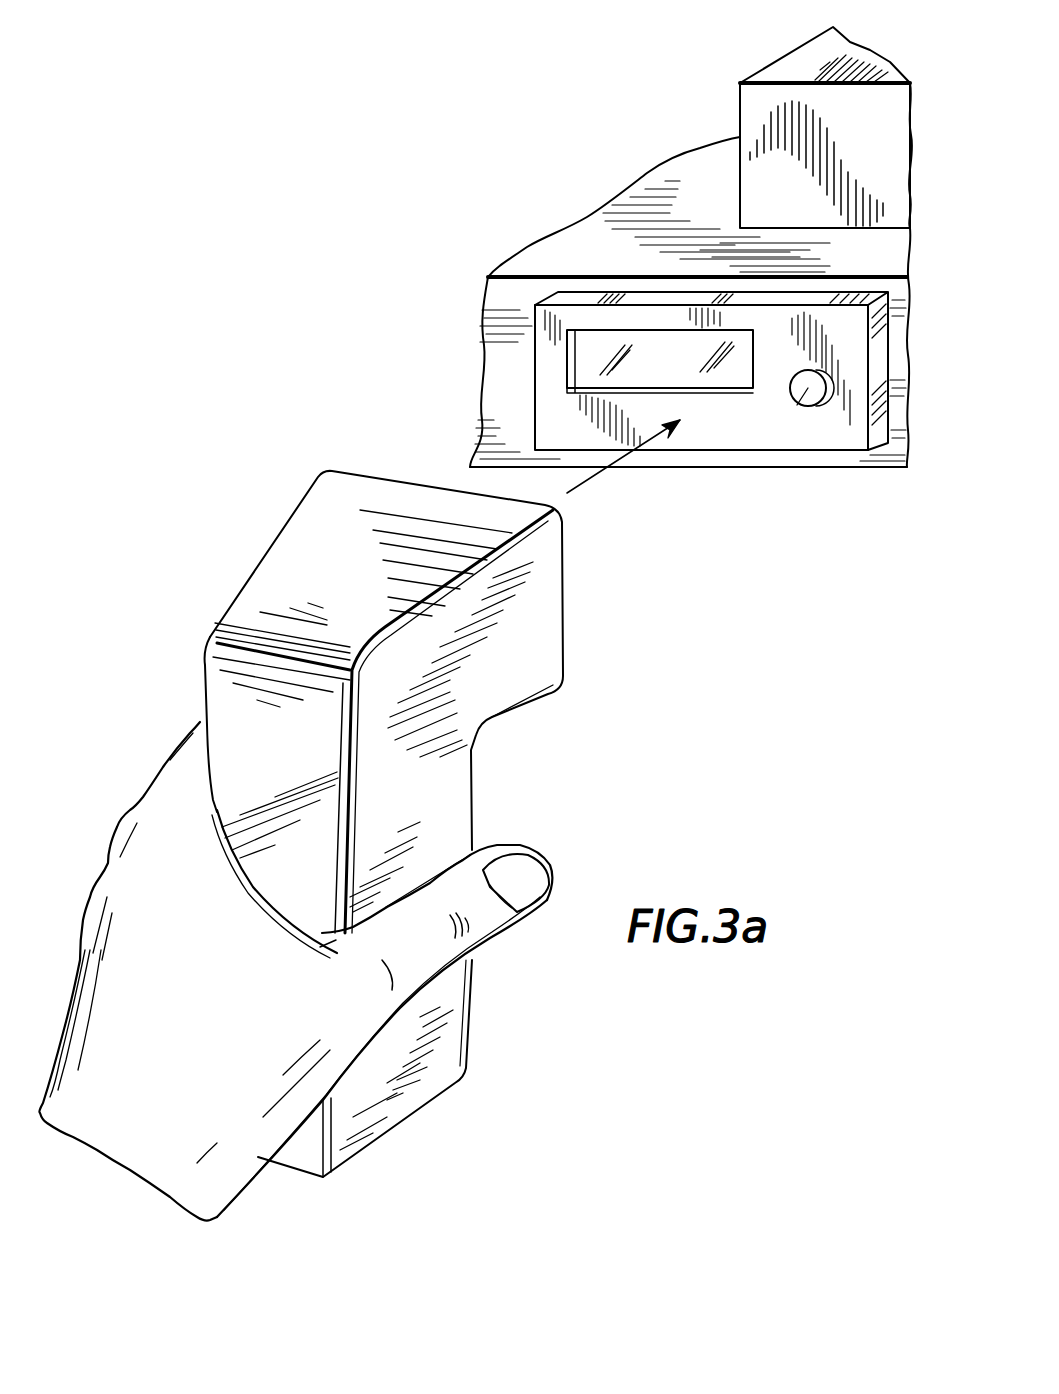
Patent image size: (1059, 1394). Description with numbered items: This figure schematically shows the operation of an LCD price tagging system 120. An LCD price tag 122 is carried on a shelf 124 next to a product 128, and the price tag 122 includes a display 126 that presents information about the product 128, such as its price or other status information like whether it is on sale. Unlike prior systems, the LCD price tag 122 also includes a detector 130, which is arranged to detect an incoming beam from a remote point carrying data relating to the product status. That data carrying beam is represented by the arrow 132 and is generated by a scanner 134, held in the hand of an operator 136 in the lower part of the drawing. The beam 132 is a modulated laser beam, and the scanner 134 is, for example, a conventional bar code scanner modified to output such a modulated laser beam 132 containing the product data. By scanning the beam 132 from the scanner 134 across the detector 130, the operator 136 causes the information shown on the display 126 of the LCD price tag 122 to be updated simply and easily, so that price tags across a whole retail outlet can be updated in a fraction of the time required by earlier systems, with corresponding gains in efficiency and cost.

The LCD price tagging system 120 is at (755, 478).
The LCD price tag 122 is at (827, 433).
The shelf 124 is at (593, 266).
The display 126 is at (740, 376).
The product 128 is at (800, 72).
The detector 130 is at (795, 407).
The data carrying beam 132 is at (612, 467).
The scanner 134 is at (565, 652).
The operator 136 is at (220, 1157).